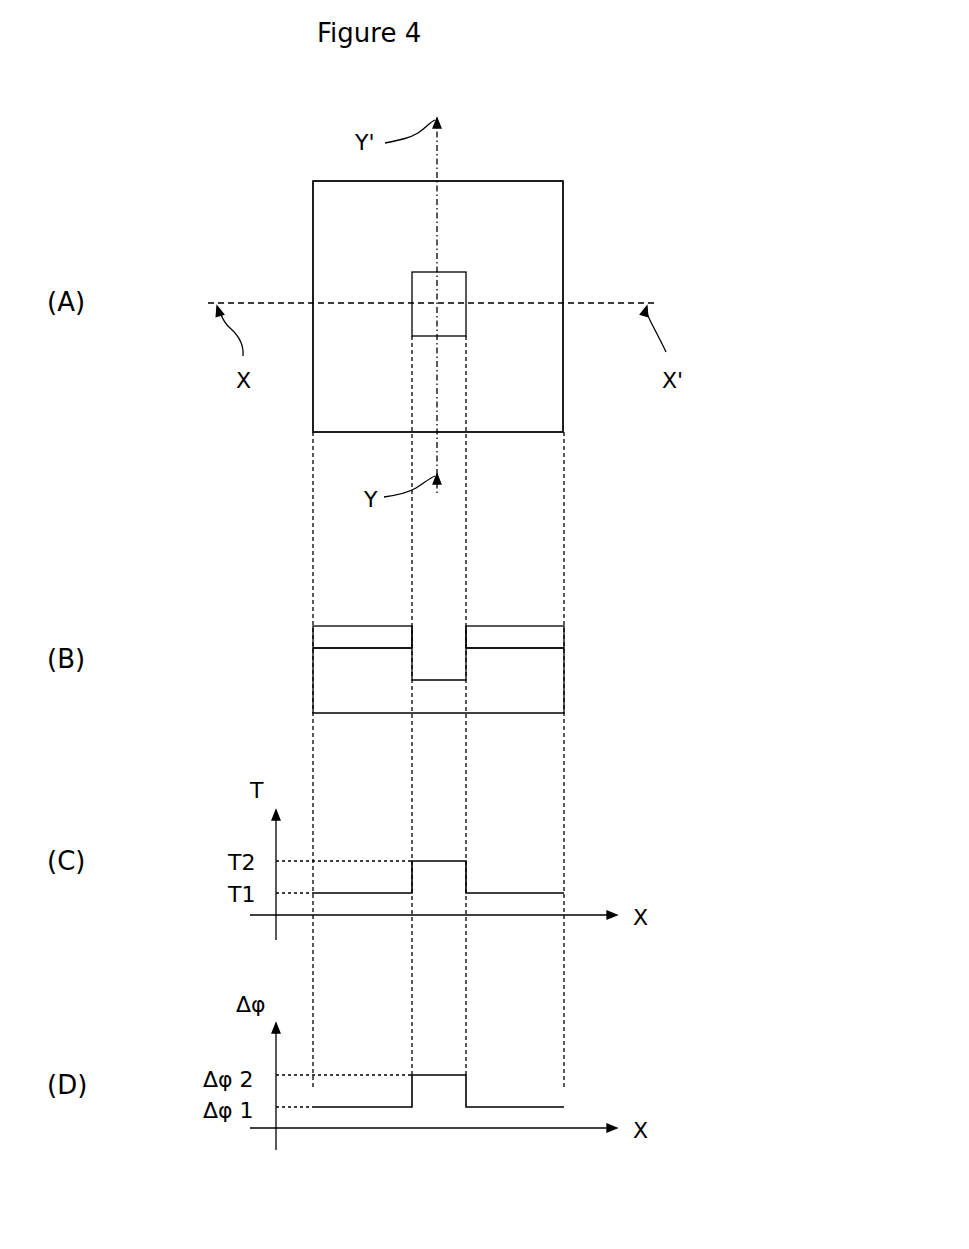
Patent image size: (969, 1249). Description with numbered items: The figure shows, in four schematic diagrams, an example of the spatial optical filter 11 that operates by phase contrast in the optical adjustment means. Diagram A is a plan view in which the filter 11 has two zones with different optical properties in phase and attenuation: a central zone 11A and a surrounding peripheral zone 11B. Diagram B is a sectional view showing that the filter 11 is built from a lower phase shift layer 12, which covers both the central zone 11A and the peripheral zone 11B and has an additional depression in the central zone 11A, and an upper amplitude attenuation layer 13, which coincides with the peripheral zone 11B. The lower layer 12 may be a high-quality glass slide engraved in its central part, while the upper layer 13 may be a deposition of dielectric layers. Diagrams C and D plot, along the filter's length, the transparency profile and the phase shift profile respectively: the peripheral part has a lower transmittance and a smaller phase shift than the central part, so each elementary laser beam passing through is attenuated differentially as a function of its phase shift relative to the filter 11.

The optical filter 11 is at (603, 237).
The central zone 11A is at (447, 292).
The peripheral zone 11B is at (552, 411).
The lower phase shift layer 12 is at (553, 698).
The upper amplitude attenuation layer 13 is at (326, 637).